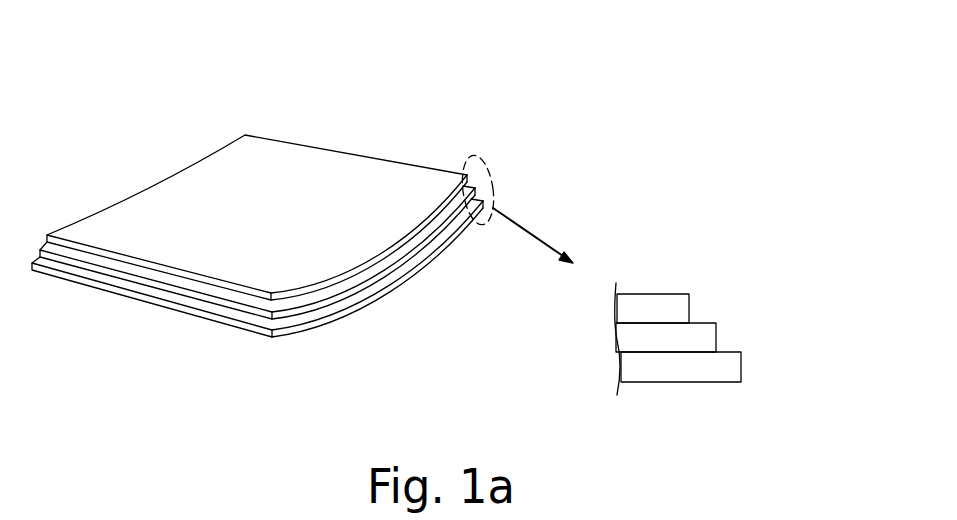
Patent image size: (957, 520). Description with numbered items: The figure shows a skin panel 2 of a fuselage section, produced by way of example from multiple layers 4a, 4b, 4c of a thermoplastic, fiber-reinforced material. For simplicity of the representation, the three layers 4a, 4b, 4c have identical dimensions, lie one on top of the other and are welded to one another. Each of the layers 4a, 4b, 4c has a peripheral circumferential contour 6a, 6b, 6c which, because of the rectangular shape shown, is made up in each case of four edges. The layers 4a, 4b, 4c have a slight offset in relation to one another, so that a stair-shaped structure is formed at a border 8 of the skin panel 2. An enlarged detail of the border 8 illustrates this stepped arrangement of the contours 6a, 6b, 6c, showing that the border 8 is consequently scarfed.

The skin panel 2 is at (373, 93).
The layer 4a is at (173, 200).
The layer 4b is at (110, 270).
The layer 4c is at (183, 306).
The peripheral circumferential contour 6a is at (380, 158).
The peripheral circumferential contour 6b is at (392, 263).
The peripheral circumferential contour 6c is at (447, 240).
The border 8 is at (500, 164).